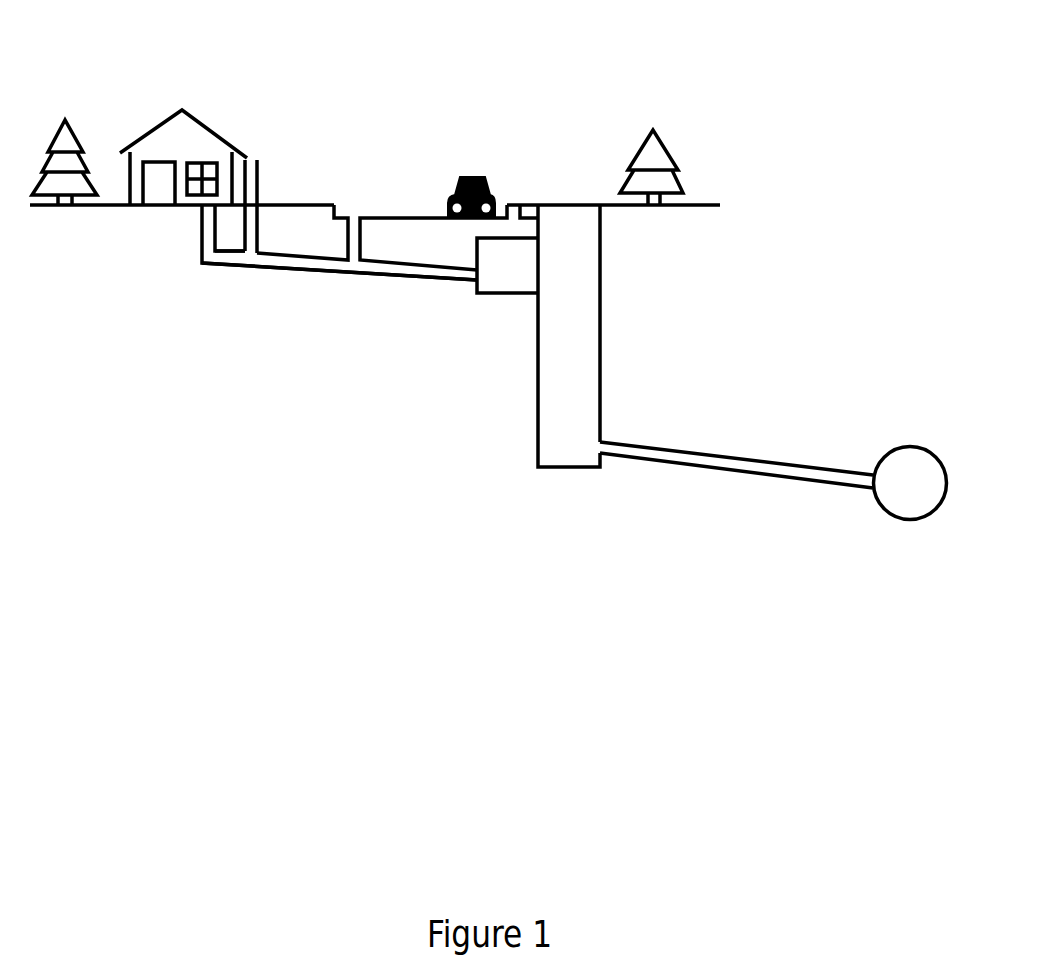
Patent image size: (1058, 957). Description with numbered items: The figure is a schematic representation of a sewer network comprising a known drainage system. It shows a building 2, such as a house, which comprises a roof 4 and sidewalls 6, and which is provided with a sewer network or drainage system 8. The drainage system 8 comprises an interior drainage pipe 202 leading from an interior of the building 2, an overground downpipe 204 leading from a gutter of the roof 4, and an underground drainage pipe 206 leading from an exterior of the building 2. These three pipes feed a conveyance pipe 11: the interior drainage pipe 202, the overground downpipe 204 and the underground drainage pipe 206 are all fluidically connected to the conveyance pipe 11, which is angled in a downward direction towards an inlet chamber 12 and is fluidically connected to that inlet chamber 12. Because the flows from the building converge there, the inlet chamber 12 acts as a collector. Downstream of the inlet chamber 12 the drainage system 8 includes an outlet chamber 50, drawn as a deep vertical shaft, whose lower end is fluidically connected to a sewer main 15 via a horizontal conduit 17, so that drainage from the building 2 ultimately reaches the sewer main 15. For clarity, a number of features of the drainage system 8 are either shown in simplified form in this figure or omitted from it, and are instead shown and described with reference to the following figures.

The building 2 is at (244, 121).
The roof 4 is at (165, 119).
The sidewalls 6 is at (120, 173).
The drainage system 8 is at (421, 407).
The conveyance pipe 11 is at (388, 276).
The inlet chamber 12 is at (507, 295).
The sewer main 15 is at (893, 447).
The horizontal conduit 17 is at (740, 473).
The outlet chamber 50 is at (600, 350).
The interior drainage pipe 202 is at (202, 230).
The overground downpipe 204 is at (258, 183).
The underground drainage pipe 206 is at (363, 235).